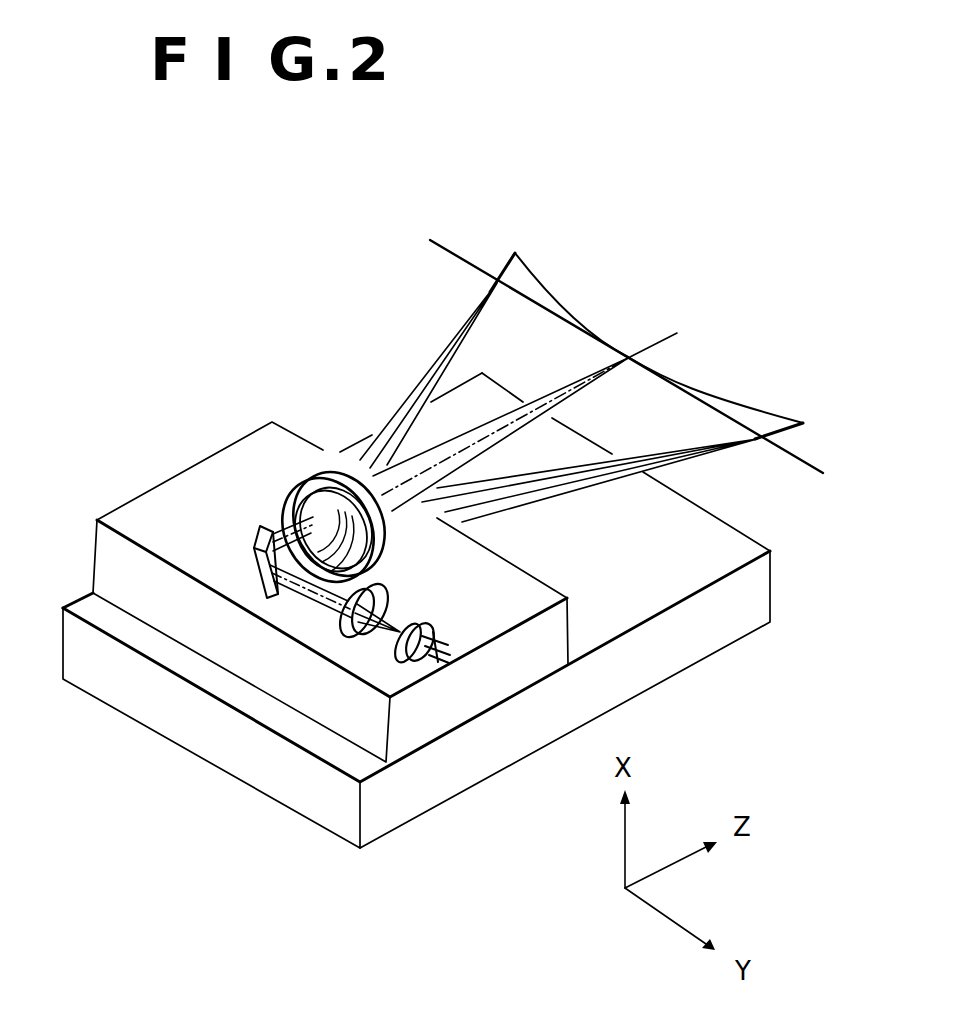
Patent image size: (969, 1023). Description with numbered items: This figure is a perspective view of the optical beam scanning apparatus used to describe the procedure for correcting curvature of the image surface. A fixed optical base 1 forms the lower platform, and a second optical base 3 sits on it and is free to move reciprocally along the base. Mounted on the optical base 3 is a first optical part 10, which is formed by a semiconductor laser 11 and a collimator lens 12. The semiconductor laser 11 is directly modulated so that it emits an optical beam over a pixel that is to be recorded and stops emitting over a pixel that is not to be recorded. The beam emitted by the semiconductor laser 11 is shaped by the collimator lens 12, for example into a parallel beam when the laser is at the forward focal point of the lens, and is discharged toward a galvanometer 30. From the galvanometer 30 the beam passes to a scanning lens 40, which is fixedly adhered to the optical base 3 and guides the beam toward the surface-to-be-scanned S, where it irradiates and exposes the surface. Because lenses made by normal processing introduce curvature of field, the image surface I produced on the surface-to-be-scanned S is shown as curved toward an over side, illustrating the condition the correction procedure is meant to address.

The optical base 1 is at (462, 763).
The optical base 3 is at (195, 487).
The first optical part 10 is at (287, 745).
The semiconductor laser 11 is at (400, 657).
The collimator lens 12 is at (343, 624).
The galvanometer 30 is at (270, 560).
The scanning lens 40 is at (292, 466).
The image surface I is at (762, 417).
The surface-to-be-scanned S is at (810, 463).